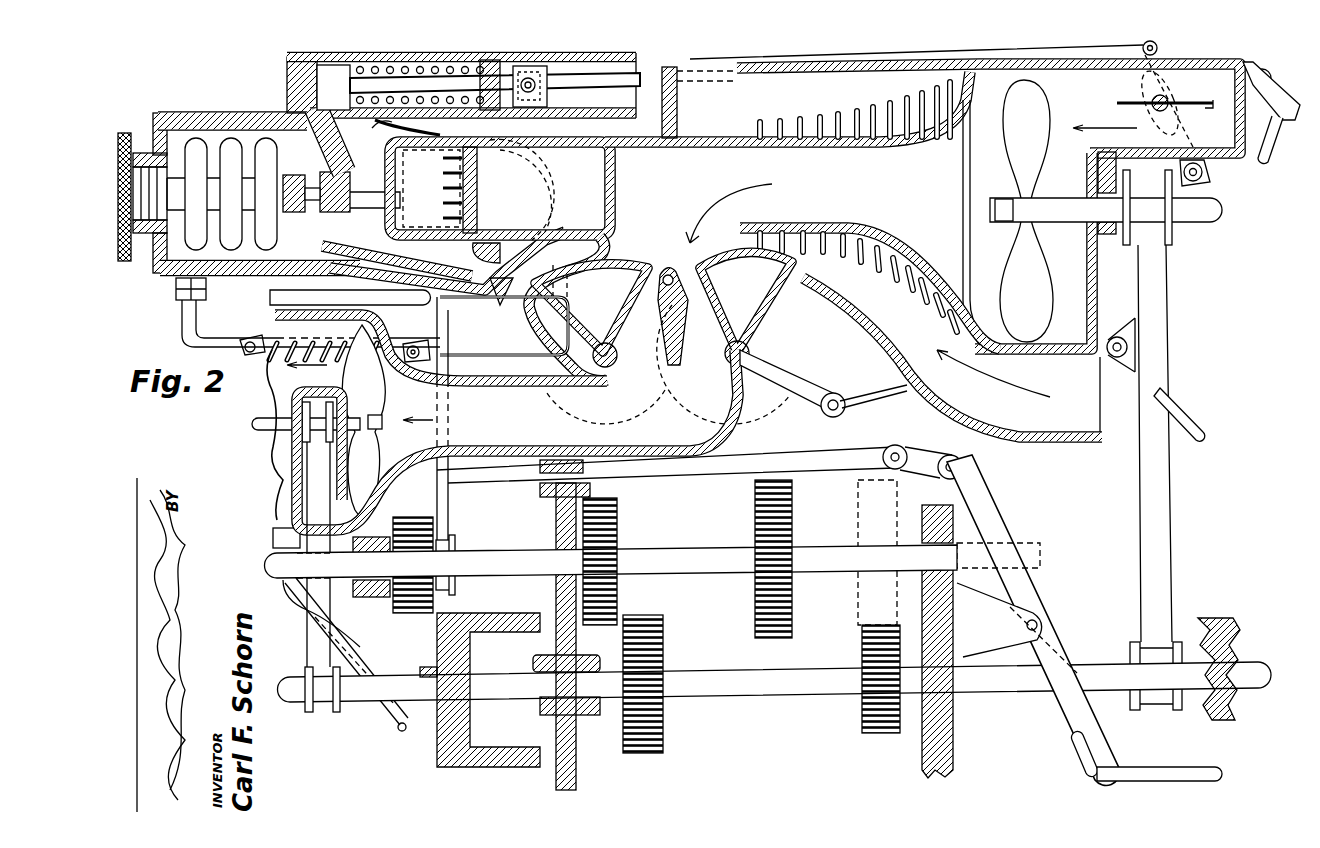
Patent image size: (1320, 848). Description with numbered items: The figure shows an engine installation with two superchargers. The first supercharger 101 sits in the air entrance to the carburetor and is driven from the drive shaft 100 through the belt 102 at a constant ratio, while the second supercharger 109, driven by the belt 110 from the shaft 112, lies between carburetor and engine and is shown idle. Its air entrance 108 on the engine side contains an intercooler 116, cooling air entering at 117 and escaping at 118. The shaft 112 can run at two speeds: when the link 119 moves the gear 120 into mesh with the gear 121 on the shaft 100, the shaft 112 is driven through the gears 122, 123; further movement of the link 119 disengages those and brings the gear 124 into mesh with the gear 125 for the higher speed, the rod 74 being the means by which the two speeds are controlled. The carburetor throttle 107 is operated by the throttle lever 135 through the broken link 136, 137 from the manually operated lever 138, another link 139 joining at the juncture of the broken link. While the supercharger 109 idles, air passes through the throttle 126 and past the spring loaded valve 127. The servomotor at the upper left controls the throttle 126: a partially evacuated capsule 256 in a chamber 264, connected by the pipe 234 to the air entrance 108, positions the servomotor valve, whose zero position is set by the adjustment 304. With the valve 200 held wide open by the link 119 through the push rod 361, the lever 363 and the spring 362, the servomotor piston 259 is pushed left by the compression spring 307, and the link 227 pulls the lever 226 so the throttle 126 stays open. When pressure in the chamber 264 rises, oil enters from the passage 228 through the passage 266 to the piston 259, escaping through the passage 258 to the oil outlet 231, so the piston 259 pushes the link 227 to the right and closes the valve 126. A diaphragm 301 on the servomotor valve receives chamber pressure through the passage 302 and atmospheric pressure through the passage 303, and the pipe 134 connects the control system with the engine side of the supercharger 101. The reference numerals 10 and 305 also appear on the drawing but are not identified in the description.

The lever arm 10 is at (1262, 162).
The rod 74 is at (1158, 770).
The drive shaft 100 is at (292, 703).
The supercharger 101 is at (318, 420).
The belt 102 is at (332, 616).
The carburetor throttle 107 is at (724, 338).
The air entrance 108 is at (868, 286).
The second supercharger 109 is at (1106, 211).
The belt 110 is at (1166, 390).
The shaft 112 is at (760, 698).
The intercooler 116 is at (850, 262).
The cooling air inlet 117 is at (1000, 392).
The cooling air outlet 118 is at (750, 103).
The link 119 is at (910, 455).
The gear 120 is at (415, 613).
The gear 121 is at (468, 767).
The gear 122 is at (618, 522).
The gear 123 is at (664, 638).
The gear 124 is at (794, 615).
The gear 125 is at (885, 735).
The throttle 126 is at (1149, 101).
The spring loaded valve 127 is at (500, 228).
The pipe 134 is at (398, 732).
The throttle lever 135 is at (822, 385).
The broken link 136 is at (898, 398).
The broken link 137 is at (1206, 176).
The manually operated lever 138 is at (1271, 99).
The link 139 is at (1192, 412).
The valve 200 is at (385, 128).
The lever 226 is at (1160, 50).
The link 227 is at (658, 68).
The passage 228 is at (365, 298).
The oil outlet 231 is at (350, 288).
The pipe 234 is at (200, 318).
The partially evacuated capsule 256 is at (208, 290).
The passage 258 is at (500, 110).
The servomotor piston 259 is at (400, 87).
The chamber 264 is at (325, 245).
The passage 266 is at (302, 110).
The diaphragm 301 is at (490, 250).
The passage 302 is at (441, 343).
The passage 303 is at (508, 296).
The adjustment 304 is at (125, 133).
The needle valve 305 is at (316, 175).
The compression spring 307 is at (288, 72).
The push rod 361 is at (448, 356).
The spring 362 is at (268, 398).
The lever 363 is at (244, 352).